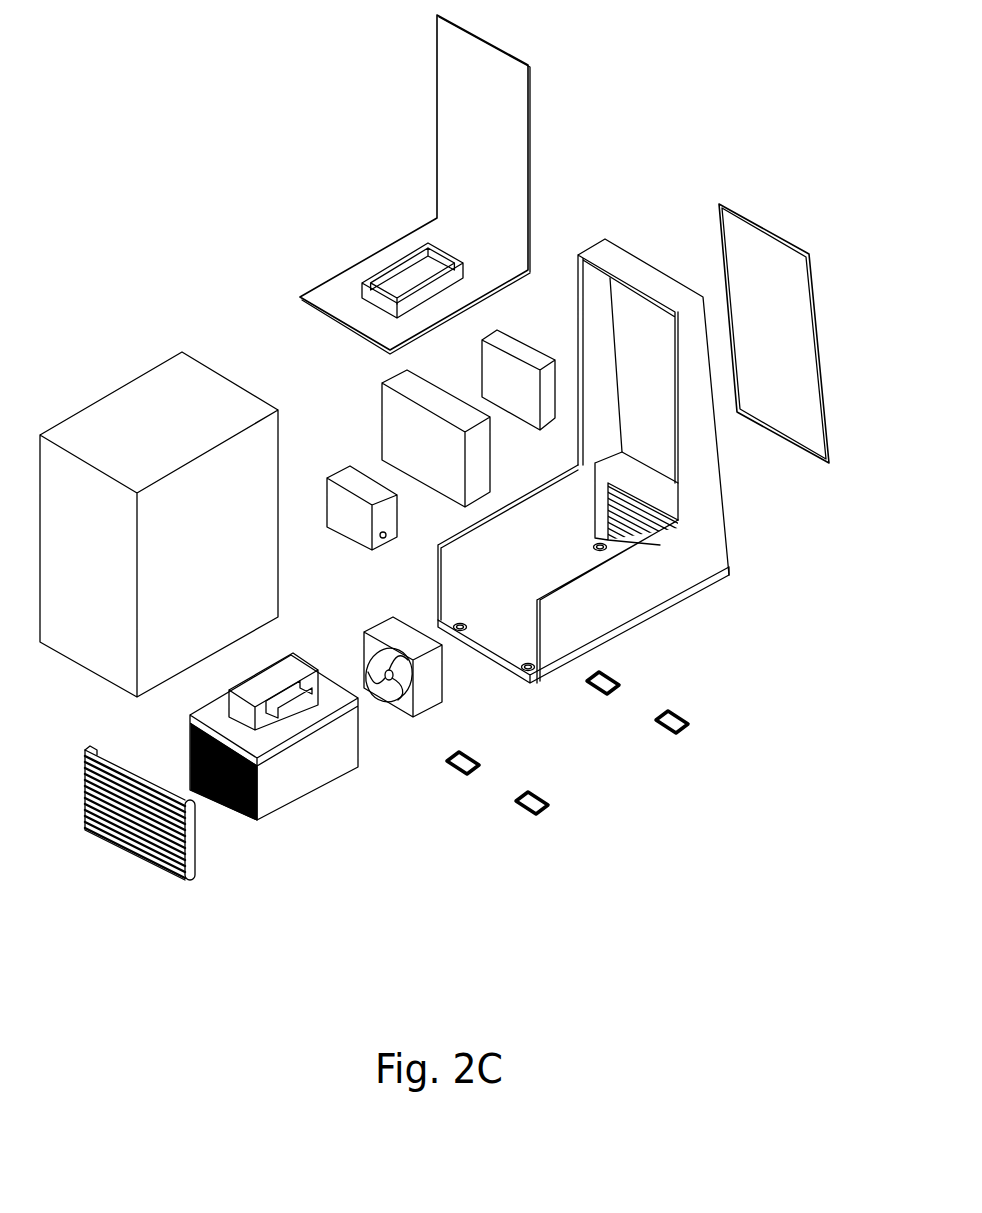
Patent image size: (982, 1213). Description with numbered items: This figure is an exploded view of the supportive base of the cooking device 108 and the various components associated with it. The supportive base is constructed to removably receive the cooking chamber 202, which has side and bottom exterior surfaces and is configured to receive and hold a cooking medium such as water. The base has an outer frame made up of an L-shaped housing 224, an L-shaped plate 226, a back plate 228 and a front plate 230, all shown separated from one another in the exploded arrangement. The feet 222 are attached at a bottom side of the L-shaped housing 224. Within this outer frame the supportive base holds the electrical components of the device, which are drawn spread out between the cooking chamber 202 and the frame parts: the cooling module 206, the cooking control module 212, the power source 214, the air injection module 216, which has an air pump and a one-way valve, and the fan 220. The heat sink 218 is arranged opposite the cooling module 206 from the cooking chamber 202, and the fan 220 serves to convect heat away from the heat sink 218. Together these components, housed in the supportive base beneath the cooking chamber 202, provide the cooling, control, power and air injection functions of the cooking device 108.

The cooking device 108 is at (728, 876).
The cooking chamber 202 is at (182, 403).
The cooling module 206 is at (297, 668).
The cooking control module 212 is at (494, 358).
The power source 214 is at (397, 433).
The air injection module 216 is at (360, 485).
The heat sink 218 is at (315, 762).
The fan 220 is at (435, 663).
The feet 222 is at (612, 678).
The L-shaped housing 224 is at (685, 568).
The L-shaped plate 226 is at (513, 130).
The back plate 228 is at (740, 257).
The front plate 230 is at (175, 848).